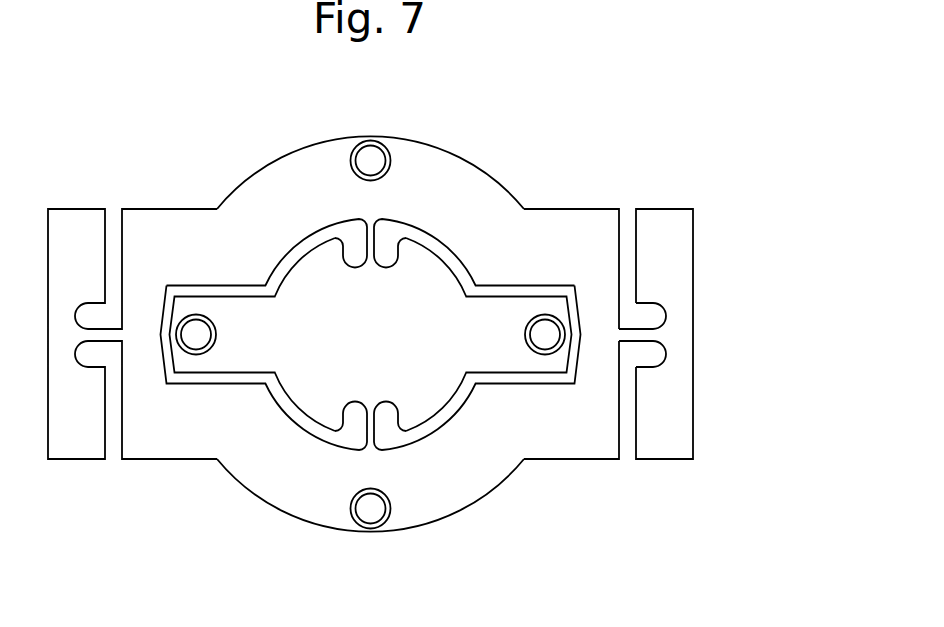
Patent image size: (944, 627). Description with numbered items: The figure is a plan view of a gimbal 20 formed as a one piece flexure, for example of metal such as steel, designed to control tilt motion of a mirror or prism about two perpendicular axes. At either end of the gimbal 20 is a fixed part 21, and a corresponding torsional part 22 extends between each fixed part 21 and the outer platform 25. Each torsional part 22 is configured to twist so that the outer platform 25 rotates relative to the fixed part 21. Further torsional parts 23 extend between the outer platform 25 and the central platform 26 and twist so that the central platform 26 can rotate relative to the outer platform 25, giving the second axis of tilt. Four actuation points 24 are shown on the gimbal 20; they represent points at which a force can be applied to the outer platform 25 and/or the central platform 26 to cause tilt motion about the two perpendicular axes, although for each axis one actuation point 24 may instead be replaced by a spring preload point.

The gimbal 20 is at (722, 170).
The fixed part 21 is at (672, 404).
The torsional part 22 is at (640, 330).
The further torsional part 23 is at (365, 428).
The actuation point 24 is at (362, 150).
The outer platform 25 is at (447, 188).
The central platform 26 is at (410, 353).